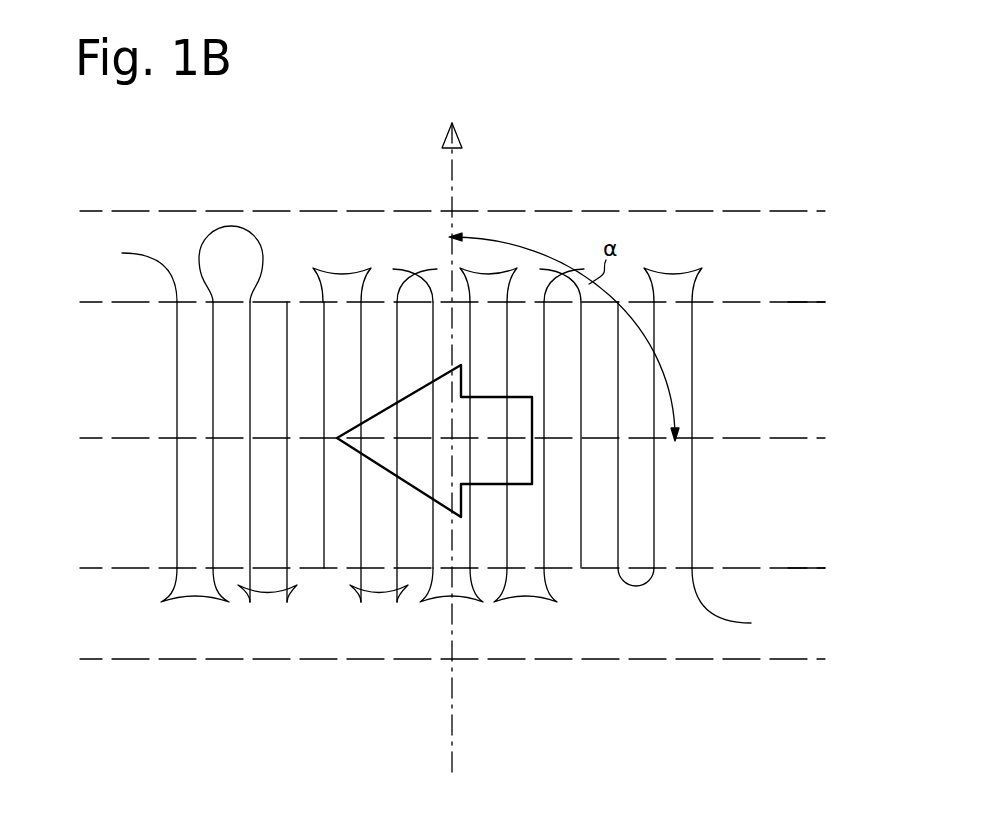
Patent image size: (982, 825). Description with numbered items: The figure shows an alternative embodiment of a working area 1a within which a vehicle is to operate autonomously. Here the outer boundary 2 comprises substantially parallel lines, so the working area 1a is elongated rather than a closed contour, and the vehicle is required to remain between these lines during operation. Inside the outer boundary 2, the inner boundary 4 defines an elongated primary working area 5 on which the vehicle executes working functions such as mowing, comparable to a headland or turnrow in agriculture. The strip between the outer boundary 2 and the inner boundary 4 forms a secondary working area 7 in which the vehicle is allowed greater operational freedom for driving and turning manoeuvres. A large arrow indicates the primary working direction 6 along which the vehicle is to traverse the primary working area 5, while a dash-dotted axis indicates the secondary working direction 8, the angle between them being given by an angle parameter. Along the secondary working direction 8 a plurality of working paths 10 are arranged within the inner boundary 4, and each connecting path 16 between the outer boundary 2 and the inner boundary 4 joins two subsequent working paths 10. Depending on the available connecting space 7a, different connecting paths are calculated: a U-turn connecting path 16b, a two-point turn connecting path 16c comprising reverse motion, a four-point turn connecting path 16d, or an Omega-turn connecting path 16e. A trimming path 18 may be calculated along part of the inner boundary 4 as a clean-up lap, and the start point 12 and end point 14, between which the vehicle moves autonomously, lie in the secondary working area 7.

The working area 1a is at (704, 183).
The outer boundary 2 is at (378, 211).
The inner boundary 4 is at (103, 302).
The primary working area 5 is at (122, 508).
The primary working direction 6 is at (415, 490).
The secondary working area 7 is at (652, 243).
The available connecting space 7a is at (278, 236).
The secondary working direction 8 is at (452, 177).
The working paths 10 is at (617, 520).
The start point 12 is at (751, 623).
The end point 14 is at (122, 253).
The connecting path 16 is at (490, 598).
The U-turn connecting path 16b is at (643, 584).
The two-point turn connecting path 16c is at (158, 604).
The four-point turn connecting path 16d is at (268, 594).
The Omega-turn connecting path 16e is at (224, 228).
The trimming path 18 is at (804, 302).